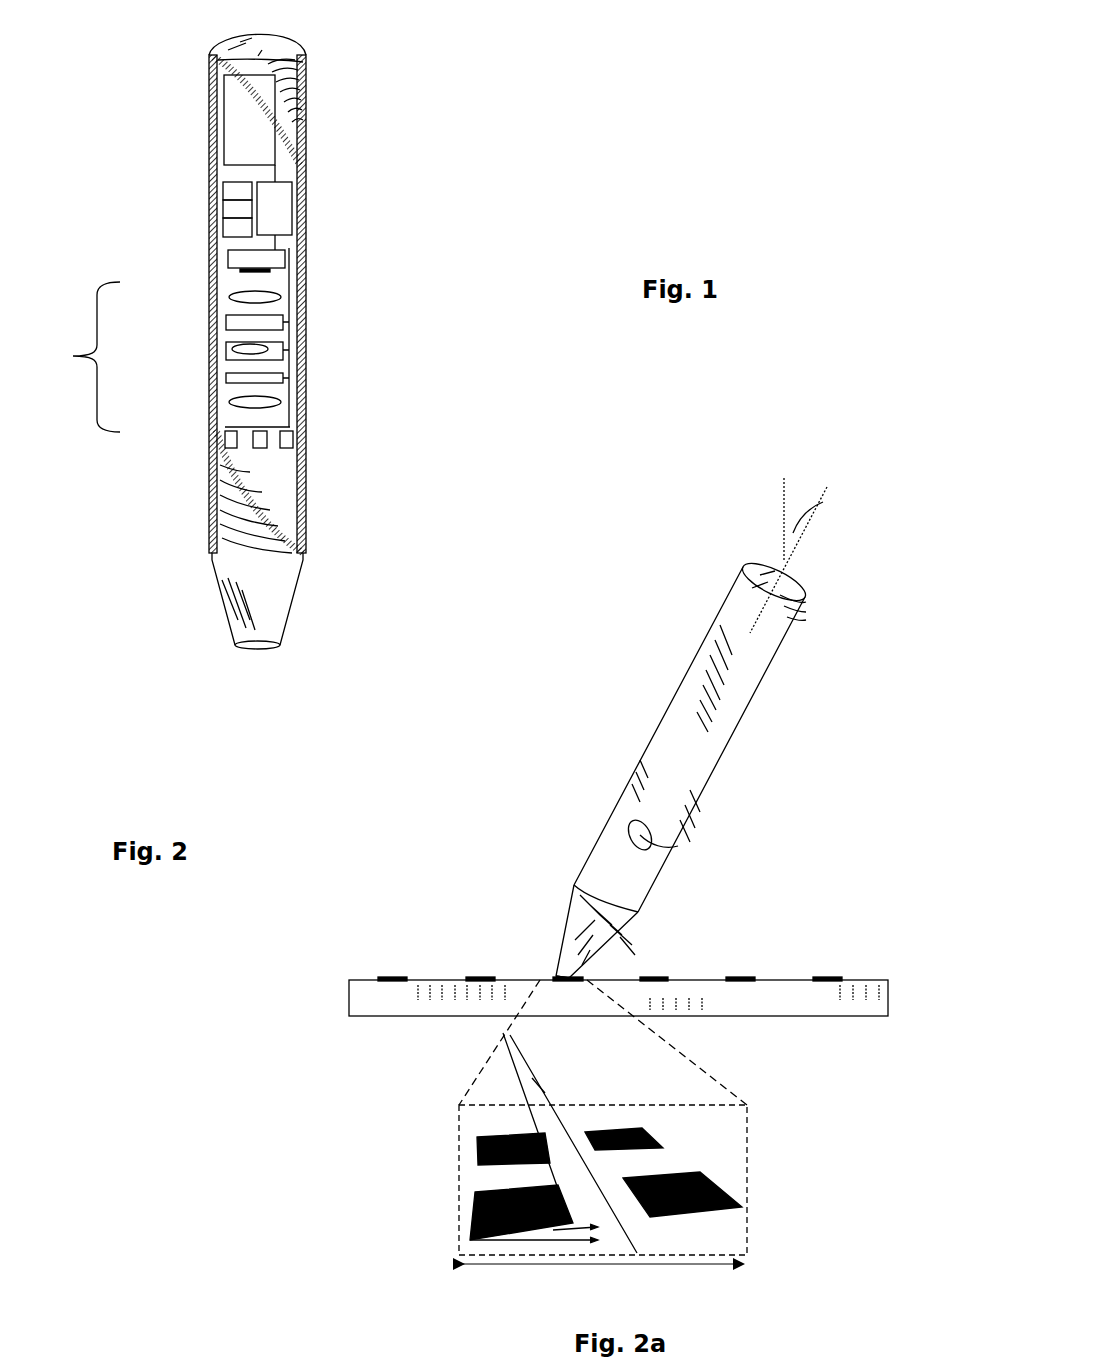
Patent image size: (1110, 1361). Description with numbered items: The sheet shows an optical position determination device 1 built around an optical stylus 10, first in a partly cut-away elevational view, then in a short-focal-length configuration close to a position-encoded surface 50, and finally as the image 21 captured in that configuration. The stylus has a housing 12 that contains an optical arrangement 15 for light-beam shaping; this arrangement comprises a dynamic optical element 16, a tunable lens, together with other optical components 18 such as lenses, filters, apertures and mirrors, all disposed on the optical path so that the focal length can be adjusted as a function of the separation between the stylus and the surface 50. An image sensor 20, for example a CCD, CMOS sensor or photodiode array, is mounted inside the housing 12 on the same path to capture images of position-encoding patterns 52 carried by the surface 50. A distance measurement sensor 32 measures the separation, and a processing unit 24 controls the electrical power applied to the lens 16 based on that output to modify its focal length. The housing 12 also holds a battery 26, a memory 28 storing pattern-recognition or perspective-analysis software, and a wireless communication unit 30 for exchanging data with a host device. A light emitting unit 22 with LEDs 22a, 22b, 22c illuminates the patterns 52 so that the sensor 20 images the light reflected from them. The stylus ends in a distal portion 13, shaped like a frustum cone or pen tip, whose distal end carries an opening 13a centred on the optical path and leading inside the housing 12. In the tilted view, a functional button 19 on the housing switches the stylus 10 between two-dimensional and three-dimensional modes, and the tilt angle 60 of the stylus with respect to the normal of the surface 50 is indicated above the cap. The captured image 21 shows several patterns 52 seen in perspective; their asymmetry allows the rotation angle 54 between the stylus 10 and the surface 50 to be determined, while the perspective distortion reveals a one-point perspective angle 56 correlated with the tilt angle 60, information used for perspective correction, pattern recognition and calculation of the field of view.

In FIG. 2, the optical position determination device 1 is at (400, 815).
In FIG. 1, the optical stylus 10 is at (437, 94).
In FIG. 2, the optical stylus 10 is at (621, 682).
In FIG. 1, the housing 12 is at (263, 72).
In FIG. 2, the housing 12 is at (743, 645).
In FIG. 1, the distal portion 13 is at (275, 597).
In FIG. 2, the distal portion 13 is at (610, 925).
In FIG. 2, the opening 13a is at (580, 967).
In FIG. 1, the optical arrangement 15 is at (70, 357).
In FIG. 1, the dynamic optical element 16 is at (232, 350).
In FIG. 1, the optical components 18 is at (233, 293).
In FIG. 2, the functional button 19 is at (648, 843).
In FIG. 1, the image sensor 20 is at (277, 258).
In FIG. 2A, the image 21 is at (458, 1140).
In FIG. 1, the light emitting unit 22 is at (314, 428).
In FIG. 1, the LED 22a is at (300, 447).
In FIG. 1, the LED 22b is at (267, 448).
In FIG. 1, the LED 22c is at (226, 437).
In FIG. 1, the processing unit 24 is at (285, 210).
In FIG. 1, the battery 26 is at (257, 135).
In FIG. 1, the memory 28 is at (232, 212).
In FIG. 1, the wireless communication unit 30 is at (232, 230).
In FIG. 1, the distance measurement sensor 32 is at (233, 193).
In FIG. 2, the position-encoded surface 50 is at (412, 940).
In FIG. 2, the position-encoding patterns 52 is at (556, 979).
In FIG. 2A, the position-encoding patterns 52 is at (715, 1148).
In FIG. 2A, the rotation angle 54 is at (597, 1230).
In FIG. 2A, the one-point perspective angle 56 is at (552, 1092).
In FIG. 2, the tilt angle 60 is at (823, 502).